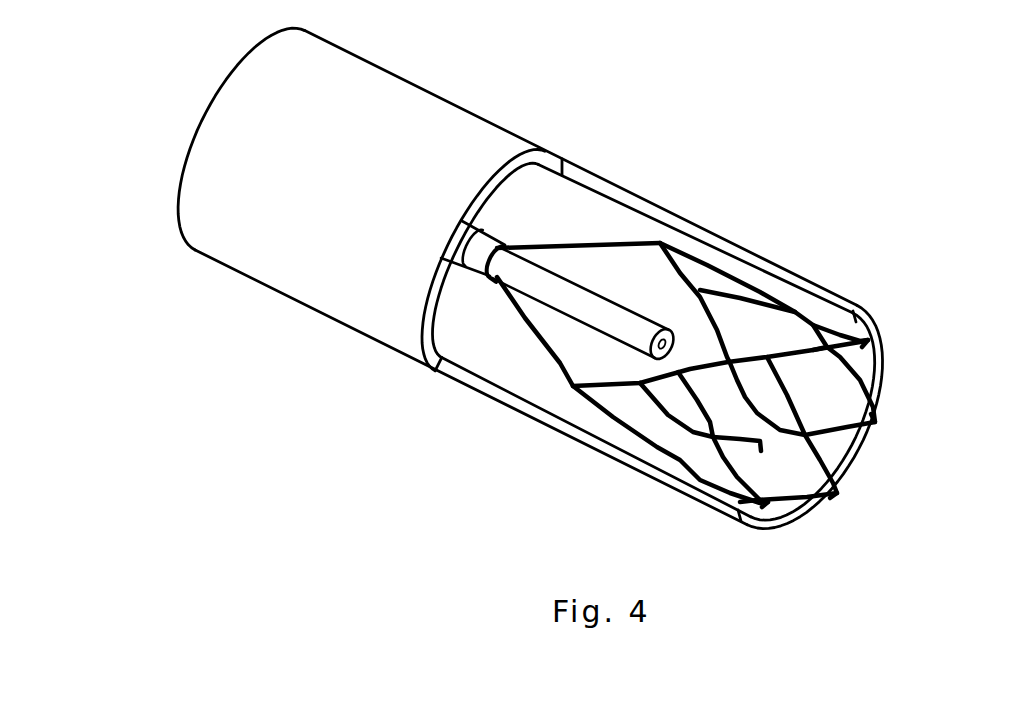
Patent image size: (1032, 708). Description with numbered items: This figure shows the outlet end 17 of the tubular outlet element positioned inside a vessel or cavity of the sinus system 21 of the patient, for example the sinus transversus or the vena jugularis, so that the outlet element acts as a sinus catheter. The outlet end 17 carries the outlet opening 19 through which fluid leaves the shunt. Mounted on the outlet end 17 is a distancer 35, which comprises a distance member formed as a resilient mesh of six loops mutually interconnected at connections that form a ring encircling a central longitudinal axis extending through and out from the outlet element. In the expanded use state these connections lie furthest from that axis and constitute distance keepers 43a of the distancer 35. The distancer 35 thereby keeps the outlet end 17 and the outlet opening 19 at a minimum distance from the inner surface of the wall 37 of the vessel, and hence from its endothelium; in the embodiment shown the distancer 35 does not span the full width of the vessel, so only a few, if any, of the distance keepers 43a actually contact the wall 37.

The outlet end 17 is at (716, 323).
The outlet opening 19 is at (667, 350).
The sinus system 21 is at (546, 212).
The distancer 35 is at (747, 347).
The wall 37 is at (530, 278).
The distance keepers 43a is at (730, 360).